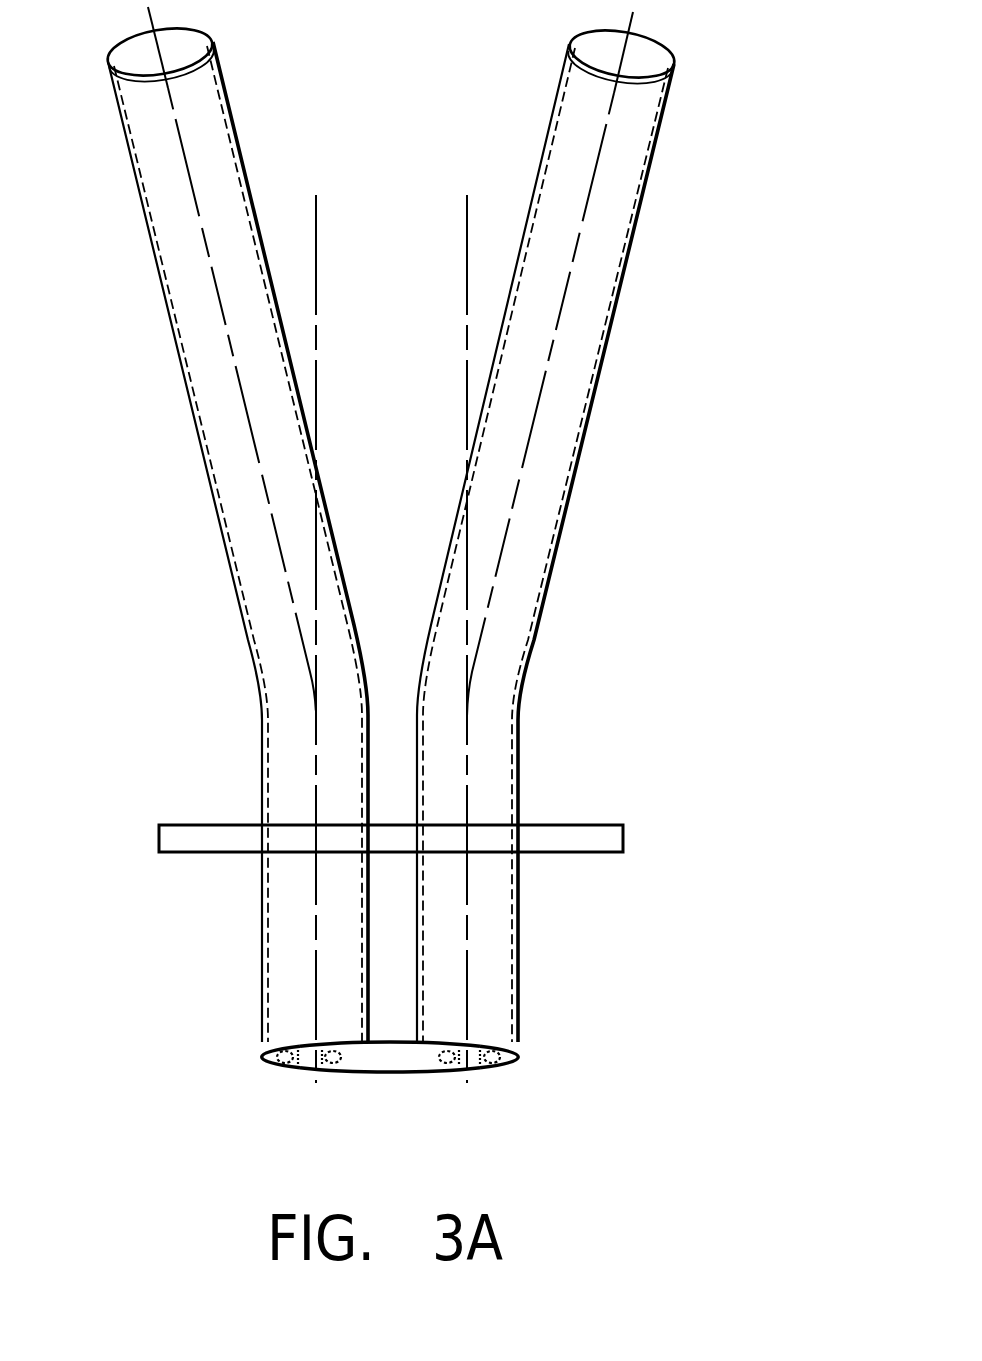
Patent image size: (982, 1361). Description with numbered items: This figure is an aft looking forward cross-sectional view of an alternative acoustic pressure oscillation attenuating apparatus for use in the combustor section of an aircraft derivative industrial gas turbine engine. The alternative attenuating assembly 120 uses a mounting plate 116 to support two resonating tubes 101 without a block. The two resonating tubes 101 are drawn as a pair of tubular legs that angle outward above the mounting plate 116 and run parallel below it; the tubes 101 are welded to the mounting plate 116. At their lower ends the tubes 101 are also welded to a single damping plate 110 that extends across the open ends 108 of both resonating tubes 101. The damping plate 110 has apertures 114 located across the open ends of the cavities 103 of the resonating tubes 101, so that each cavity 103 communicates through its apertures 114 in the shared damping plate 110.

The resonating tube 101 is at (188, 386).
The cavity 103 is at (288, 925).
The open end 108 is at (278, 1072).
The damping plate 110 is at (387, 1062).
The aperture 114 is at (265, 1057).
The mounting plate 116 is at (566, 825).
The attenuating assembly 120 is at (251, 981).